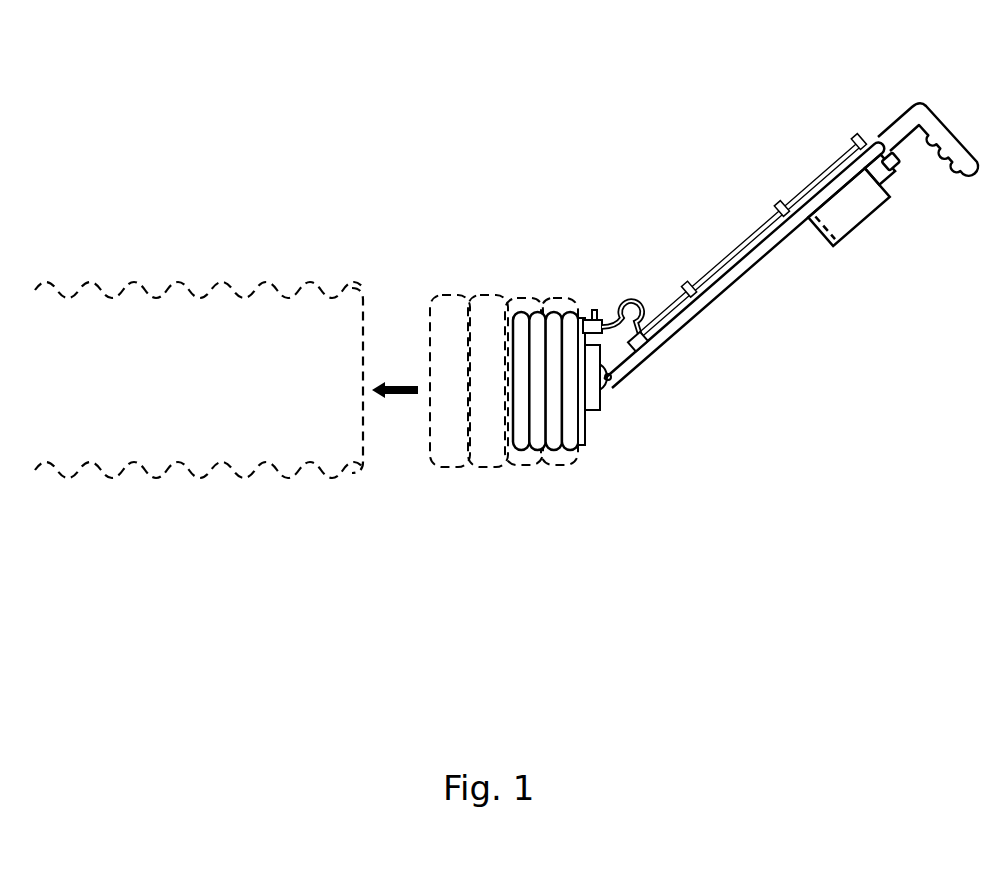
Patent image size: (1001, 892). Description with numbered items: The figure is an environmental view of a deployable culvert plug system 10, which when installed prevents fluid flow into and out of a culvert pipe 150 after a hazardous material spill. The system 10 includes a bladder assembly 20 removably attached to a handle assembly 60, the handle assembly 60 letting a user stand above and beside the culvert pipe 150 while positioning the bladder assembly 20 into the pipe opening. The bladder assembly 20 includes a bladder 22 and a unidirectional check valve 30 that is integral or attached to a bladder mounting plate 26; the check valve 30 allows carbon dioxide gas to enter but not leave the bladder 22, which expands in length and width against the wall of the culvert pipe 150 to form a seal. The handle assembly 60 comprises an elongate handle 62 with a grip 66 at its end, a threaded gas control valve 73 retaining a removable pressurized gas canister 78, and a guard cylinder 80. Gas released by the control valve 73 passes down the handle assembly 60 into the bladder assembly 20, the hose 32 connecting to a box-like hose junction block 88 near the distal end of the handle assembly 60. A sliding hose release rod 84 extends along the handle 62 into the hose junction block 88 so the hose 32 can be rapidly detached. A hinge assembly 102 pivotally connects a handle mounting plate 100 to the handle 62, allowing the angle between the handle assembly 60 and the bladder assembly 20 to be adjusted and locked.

The deployable culvert plug system 10 is at (621, 142).
The bladder assembly 20 is at (531, 297).
The bladder 22 is at (522, 467).
The bladder mounting plate 26 is at (583, 433).
The unidirectional check valve 30 is at (595, 310).
The hose 32 is at (632, 297).
The handle assembly 60 is at (797, 246).
The handle 62 is at (652, 355).
The grip 66 is at (916, 112).
The gas control valve 73 is at (893, 165).
The CO2 gas canister 78 is at (822, 243).
The guard cylinder 80 is at (850, 217).
The hose release rod 84 is at (820, 180).
The hose junction block 88 is at (640, 341).
The handle mounting plate 100 is at (597, 352).
The hinge assembly 102 is at (612, 392).
The culvert pipe 150 is at (195, 288).